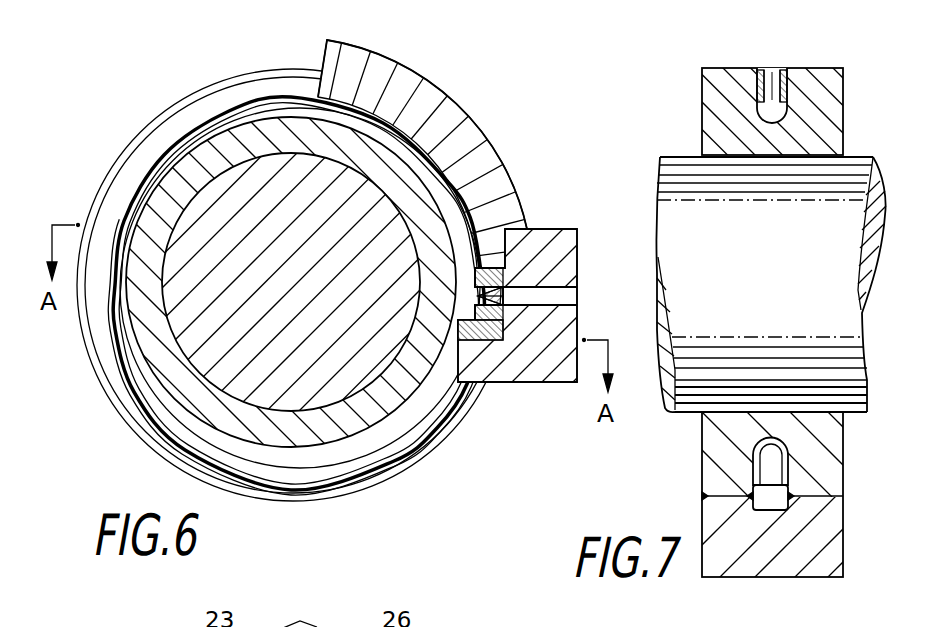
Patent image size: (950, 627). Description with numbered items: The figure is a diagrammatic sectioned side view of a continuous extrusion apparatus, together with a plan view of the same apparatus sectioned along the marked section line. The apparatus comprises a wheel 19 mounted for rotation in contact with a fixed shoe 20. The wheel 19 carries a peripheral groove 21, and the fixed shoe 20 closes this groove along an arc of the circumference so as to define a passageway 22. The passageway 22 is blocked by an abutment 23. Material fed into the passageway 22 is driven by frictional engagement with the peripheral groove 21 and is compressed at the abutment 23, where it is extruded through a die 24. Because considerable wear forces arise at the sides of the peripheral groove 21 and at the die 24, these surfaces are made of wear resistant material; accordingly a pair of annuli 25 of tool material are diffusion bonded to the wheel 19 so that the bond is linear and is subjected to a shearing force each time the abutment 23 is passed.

In FIG. 6, the wheel 19 is at (158, 117).
In FIG. 7, the wheel 19 is at (701, 107).
In FIG. 6, the fixed shoe 20 is at (427, 98).
In FIG. 7, the fixed shoe 20 is at (702, 563).
In FIG. 6, the peripheral groove 21 is at (230, 118).
In FIG. 7, the peripheral groove 21 is at (772, 82).
In FIG. 6, the passageway 22 is at (425, 173).
In FIG. 6, the abutment 23 is at (480, 372).
In FIG. 6, the die 24 is at (485, 267).
In FIG. 6, the annuli of tool material 25 is at (112, 352).
In FIG. 7, the annuli of tool material 25 is at (763, 72).